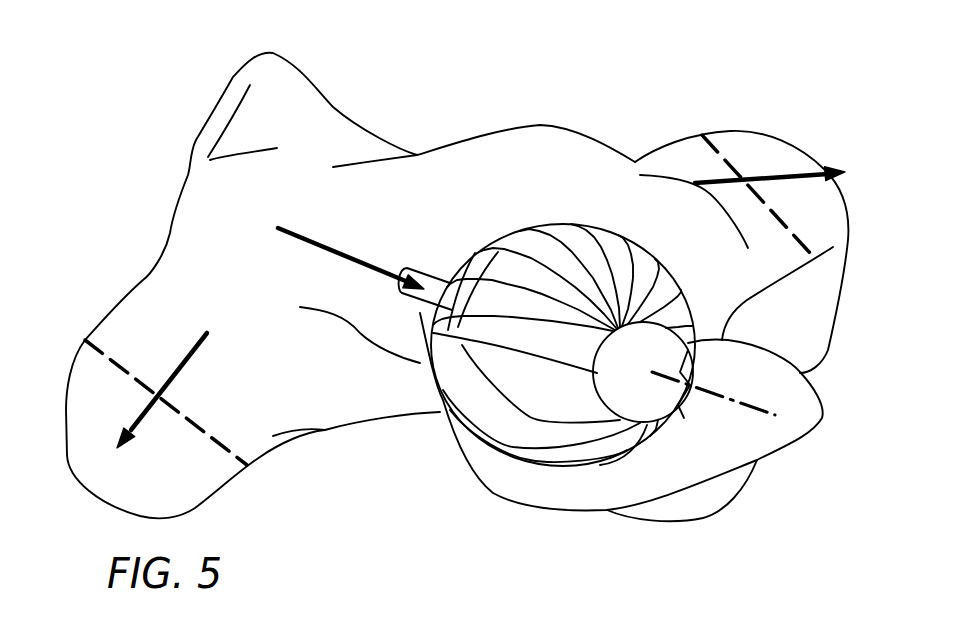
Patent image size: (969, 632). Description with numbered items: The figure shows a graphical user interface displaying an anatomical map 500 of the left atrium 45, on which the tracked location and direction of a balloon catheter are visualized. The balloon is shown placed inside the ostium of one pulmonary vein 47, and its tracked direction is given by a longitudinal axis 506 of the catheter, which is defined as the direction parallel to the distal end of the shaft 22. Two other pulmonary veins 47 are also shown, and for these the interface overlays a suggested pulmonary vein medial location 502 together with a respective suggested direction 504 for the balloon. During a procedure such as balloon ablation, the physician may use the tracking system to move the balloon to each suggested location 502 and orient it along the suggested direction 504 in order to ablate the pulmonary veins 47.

The anatomical map 500 is at (413, 72).
The suggested pulmonary vein medial location 502 is at (652, 137).
The suggested direction 504 is at (380, 543).
The pulmonary vein 47 is at (780, 143).
The left atrium 45 is at (336, 213).
The shaft 22 is at (433, 279).
The longitudinal axis 506 is at (773, 415).